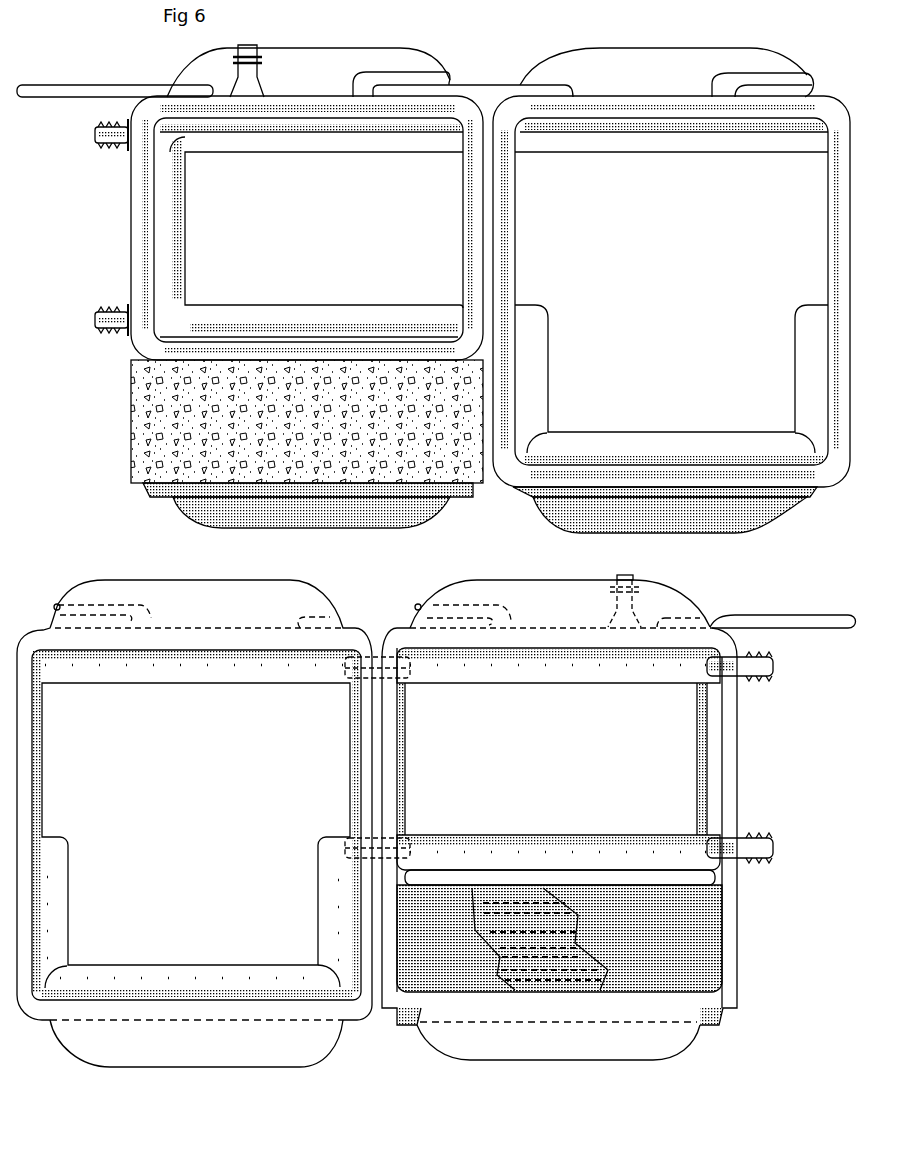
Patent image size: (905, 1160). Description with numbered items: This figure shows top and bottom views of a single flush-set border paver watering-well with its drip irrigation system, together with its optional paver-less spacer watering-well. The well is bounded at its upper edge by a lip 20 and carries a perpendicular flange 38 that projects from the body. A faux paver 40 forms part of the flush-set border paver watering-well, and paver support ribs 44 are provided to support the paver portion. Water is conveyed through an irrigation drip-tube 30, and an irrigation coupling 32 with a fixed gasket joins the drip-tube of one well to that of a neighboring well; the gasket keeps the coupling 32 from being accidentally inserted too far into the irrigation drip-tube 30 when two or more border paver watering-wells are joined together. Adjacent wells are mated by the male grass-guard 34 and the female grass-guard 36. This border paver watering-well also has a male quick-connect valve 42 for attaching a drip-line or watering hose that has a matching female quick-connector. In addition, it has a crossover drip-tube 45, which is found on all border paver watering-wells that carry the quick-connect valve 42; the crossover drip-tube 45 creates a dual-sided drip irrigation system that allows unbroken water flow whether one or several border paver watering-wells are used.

The lip 20 is at (128, 243).
The irrigation drip-tube 30 is at (152, 985).
The irrigation coupling 32 is at (118, 147).
The male grass-guard 34 is at (495, 82).
The female grass-guard 36 is at (448, 78).
The perpendicular flange 38 is at (190, 72).
The faux paver 40 is at (128, 417).
The male quick-connect valve 42 is at (263, 78).
The paver support ribs 44 is at (581, 977).
The crossover drip tube 45 is at (163, 272).